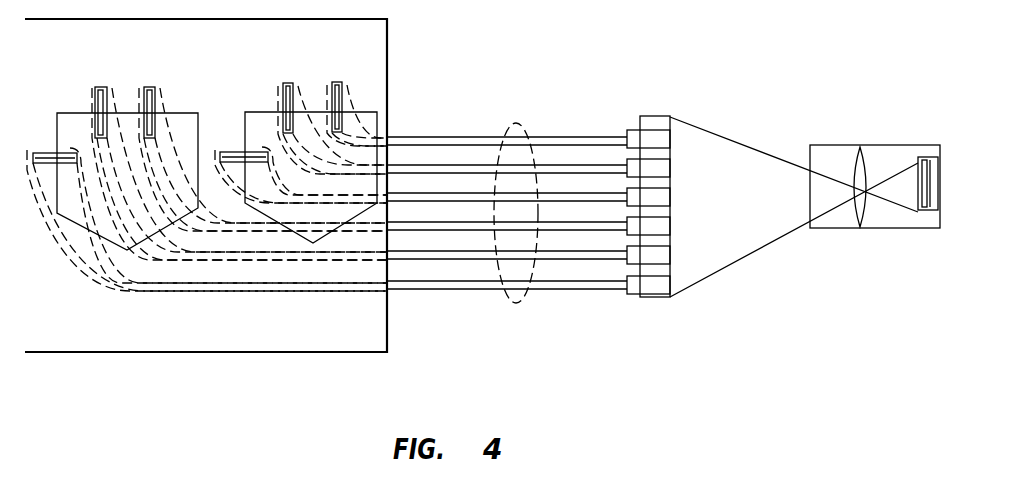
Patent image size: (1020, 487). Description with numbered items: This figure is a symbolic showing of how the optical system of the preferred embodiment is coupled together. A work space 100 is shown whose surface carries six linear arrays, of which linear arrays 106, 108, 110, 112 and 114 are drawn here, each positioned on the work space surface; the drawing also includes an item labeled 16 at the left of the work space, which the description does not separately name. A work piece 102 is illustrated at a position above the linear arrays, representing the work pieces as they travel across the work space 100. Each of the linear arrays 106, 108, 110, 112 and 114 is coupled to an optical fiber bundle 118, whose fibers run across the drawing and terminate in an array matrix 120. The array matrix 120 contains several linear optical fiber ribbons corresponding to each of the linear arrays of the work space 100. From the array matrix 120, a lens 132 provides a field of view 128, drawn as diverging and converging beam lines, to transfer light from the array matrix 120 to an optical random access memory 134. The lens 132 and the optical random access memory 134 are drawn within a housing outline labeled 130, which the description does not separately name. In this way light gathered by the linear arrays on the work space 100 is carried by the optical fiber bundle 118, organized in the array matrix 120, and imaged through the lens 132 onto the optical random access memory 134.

The optical connector 16 is at (45, 152).
The work space 100 is at (388, 44).
The work piece 102 is at (378, 106).
The linear array 106 is at (341, 81).
The linear array 108 is at (287, 82).
The linear array 110 is at (255, 152).
The linear array 112 is at (151, 85).
The linear array 114 is at (103, 85).
The optical fiber bundle 118 is at (515, 125).
The array matrix 120 is at (655, 116).
The field of view 128 is at (745, 142).
The receiver housing 130 is at (820, 145).
The lens 132 is at (867, 162).
The optical random access memory 134 is at (923, 157).